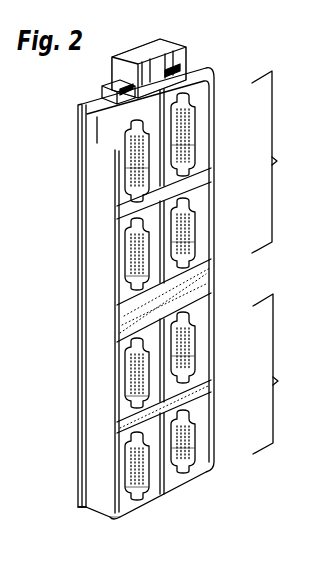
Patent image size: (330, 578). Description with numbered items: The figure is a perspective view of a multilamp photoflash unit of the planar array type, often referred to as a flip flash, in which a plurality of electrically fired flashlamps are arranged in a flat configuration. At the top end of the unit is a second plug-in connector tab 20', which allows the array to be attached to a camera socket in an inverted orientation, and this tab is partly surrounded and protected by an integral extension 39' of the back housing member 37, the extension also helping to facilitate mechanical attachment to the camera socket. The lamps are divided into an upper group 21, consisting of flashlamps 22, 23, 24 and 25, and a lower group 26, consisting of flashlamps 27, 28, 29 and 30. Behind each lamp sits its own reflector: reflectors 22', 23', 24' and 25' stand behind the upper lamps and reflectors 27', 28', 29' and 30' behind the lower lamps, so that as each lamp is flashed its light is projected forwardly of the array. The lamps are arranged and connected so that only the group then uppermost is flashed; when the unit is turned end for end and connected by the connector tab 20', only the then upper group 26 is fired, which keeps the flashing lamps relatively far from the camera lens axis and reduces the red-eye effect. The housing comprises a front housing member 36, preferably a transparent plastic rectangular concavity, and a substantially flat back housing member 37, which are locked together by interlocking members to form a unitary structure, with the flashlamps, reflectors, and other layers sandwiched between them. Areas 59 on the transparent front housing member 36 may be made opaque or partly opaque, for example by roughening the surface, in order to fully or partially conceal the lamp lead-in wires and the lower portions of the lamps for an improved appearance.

The second plug-in connector tab 20' is at (149, 54).
The integral extension 39' is at (159, 58).
The upper group 21 is at (277, 161).
The lower group 26 is at (278, 381).
The flashlamp 22 is at (98, 161).
The reflector 22' is at (92, 167).
The flashlamp 23 is at (209, 132).
The reflector 23' is at (212, 128).
The flashlamp 24 is at (96, 254).
The reflector 24' is at (95, 279).
The flashlamp 25 is at (208, 231).
The reflector 25' is at (212, 231).
The flashlamp 27 is at (96, 373).
The reflector 27' is at (95, 412).
The flashlamp 28 is at (208, 347).
The reflector 28' is at (212, 352).
The flashlamp 29 is at (96, 466).
The reflector 29' is at (98, 491).
The flashlamp 30 is at (208, 439).
The reflector 30' is at (212, 444).
The areas 59 is at (200, 177).
The front housing member 36 is at (101, 521).
The back housing member 37 is at (82, 508).